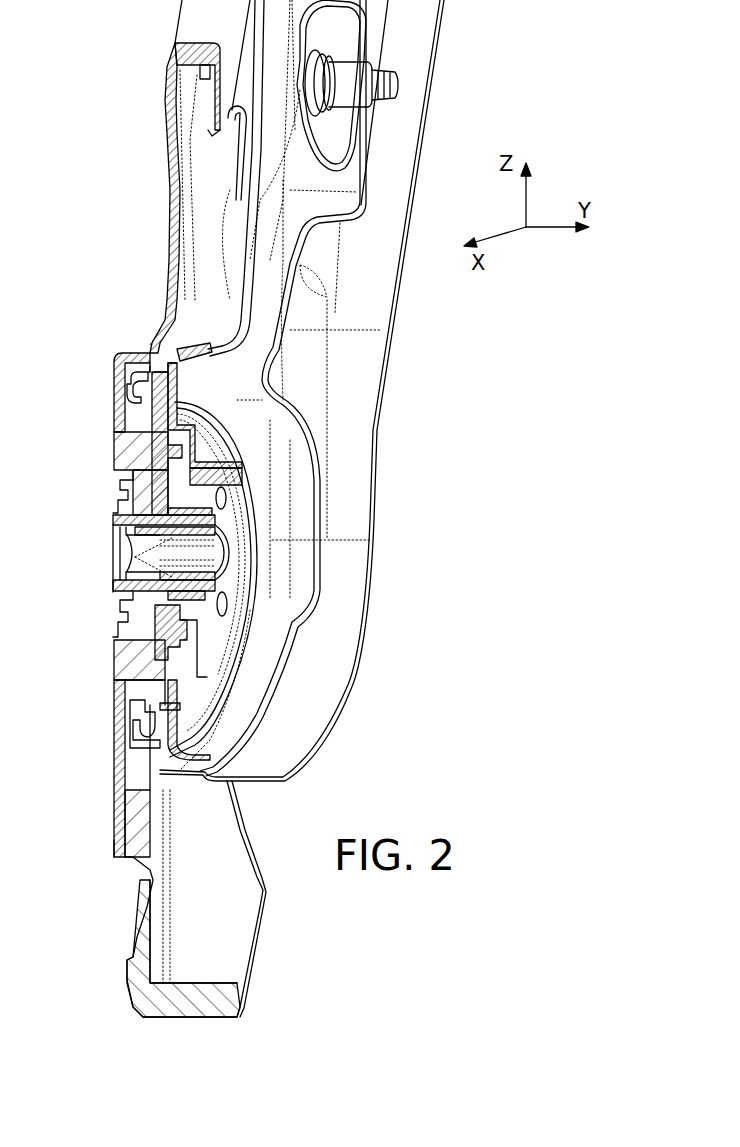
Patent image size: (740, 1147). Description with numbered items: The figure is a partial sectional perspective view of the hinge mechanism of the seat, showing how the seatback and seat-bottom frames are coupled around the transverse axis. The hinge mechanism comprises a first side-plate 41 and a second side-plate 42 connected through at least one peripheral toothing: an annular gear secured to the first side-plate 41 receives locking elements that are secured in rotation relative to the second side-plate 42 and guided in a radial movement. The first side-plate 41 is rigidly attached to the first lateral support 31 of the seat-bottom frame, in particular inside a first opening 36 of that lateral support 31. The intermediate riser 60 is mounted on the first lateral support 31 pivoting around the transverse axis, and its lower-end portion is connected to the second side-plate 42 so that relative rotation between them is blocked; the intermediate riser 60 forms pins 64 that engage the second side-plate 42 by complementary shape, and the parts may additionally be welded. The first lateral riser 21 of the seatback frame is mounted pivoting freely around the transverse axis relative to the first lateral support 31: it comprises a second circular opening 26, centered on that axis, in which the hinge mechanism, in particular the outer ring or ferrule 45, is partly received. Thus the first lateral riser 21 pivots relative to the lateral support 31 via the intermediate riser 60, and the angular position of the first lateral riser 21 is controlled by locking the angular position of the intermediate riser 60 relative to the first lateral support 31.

The first lateral riser 21 is at (190, 262).
The second circular opening 26 is at (141, 370).
The first lateral support 31 is at (133, 933).
The first opening 36 is at (117, 422).
The first side-plate 41 is at (128, 662).
The second side-plate 42 is at (165, 632).
The outer ring or ferrule 45 is at (127, 375).
The intermediate riser 60 is at (280, 478).
The pins 64 is at (235, 568).